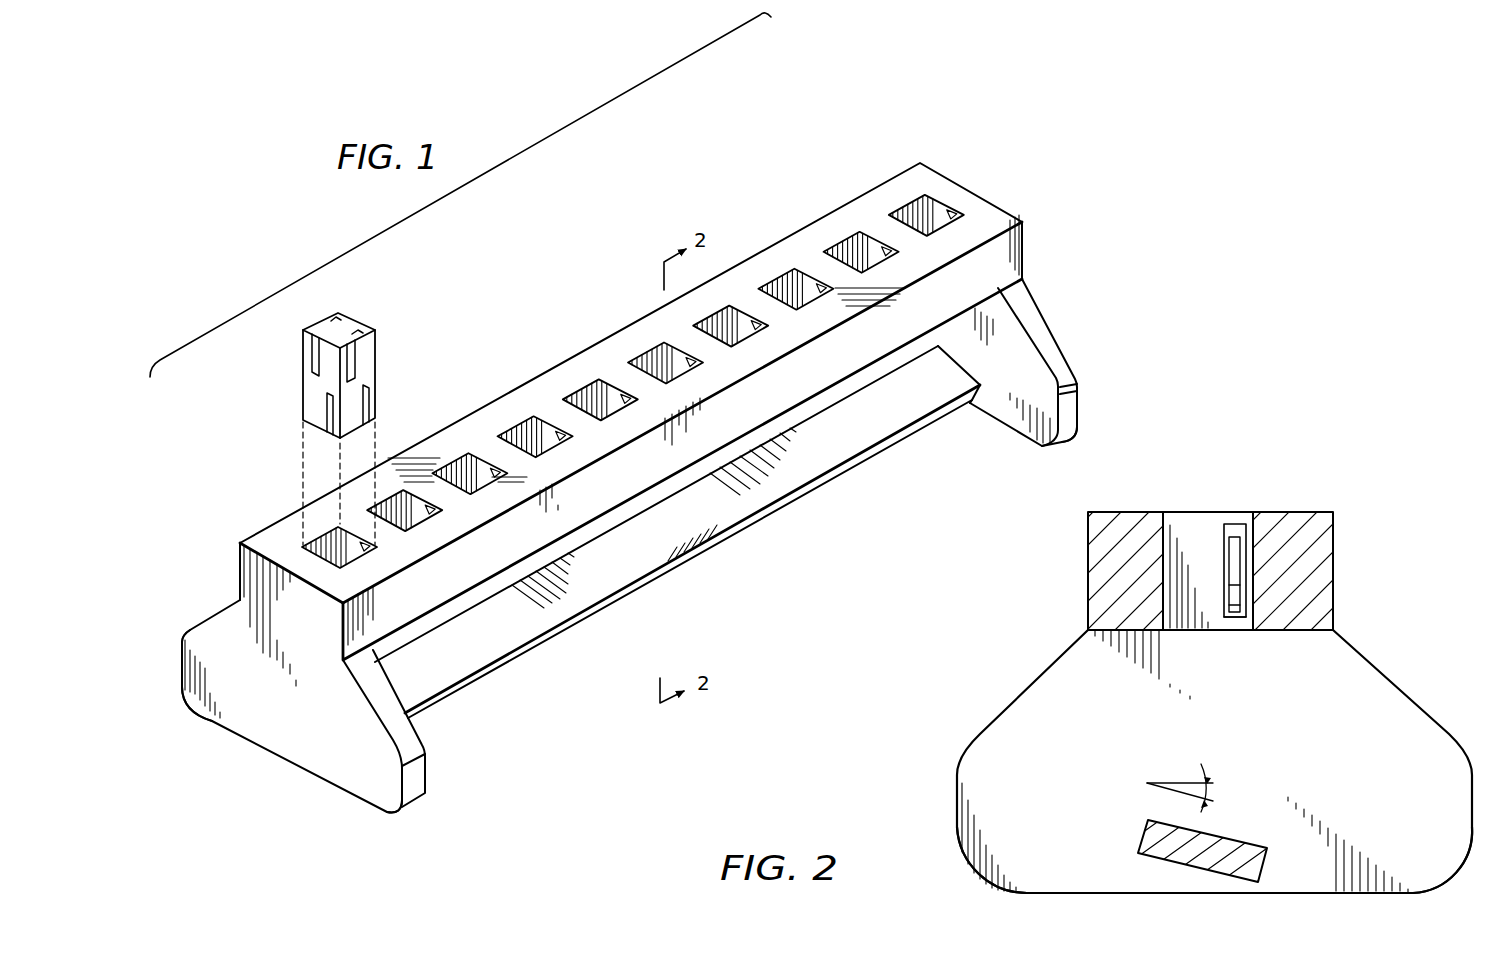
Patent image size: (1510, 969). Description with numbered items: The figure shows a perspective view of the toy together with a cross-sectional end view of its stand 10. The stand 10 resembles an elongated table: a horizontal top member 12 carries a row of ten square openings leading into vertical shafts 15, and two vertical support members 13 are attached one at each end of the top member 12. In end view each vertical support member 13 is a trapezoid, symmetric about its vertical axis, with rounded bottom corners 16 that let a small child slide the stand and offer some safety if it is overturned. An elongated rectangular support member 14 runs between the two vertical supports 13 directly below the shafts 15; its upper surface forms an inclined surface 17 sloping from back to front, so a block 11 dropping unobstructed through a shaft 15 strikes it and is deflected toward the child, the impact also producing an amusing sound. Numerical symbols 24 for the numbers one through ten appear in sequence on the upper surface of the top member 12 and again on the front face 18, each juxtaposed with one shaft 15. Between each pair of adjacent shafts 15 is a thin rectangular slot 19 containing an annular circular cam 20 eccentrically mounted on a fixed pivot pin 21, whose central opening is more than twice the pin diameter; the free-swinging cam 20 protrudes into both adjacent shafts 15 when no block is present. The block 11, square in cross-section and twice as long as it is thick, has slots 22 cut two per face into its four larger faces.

In FIG. 1, the stand 10 is at (594, 257).
In FIG. 1, the block 11 is at (296, 377).
In FIG. 2, the top member 12 is at (1334, 567).
In FIG. 1, the vertical support member 13 is at (288, 747).
In FIG. 2, the vertical support member 13 is at (1398, 702).
In FIG. 1, the elongated rectangular support member 14 is at (623, 570).
In FIG. 2, the elongated rectangular support member 14 is at (1248, 848).
In FIG. 1, the shaft 15 is at (331, 537).
In FIG. 2, the shaft 15 is at (1192, 507).
In FIG. 1, the rounded bottom corner 16 is at (182, 658).
In FIG. 2, the rounded bottom corner 16 is at (962, 848).
In FIG. 2, the inclined surface 17 is at (1196, 788).
In FIG. 1, the front face 18 is at (620, 490).
In FIG. 2, the front face 18 is at (1084, 570).
In FIG. 1, the slot 19 is at (370, 538).
In FIG. 2, the slot 19 is at (1233, 524).
In FIG. 2, the circular cam 20 is at (1234, 630).
In FIG. 2, the pivot pin 21 is at (1228, 557).
In FIG. 1, the slots 22 is at (343, 326).
In FIG. 1, the numerical symbols 24 is at (755, 262).